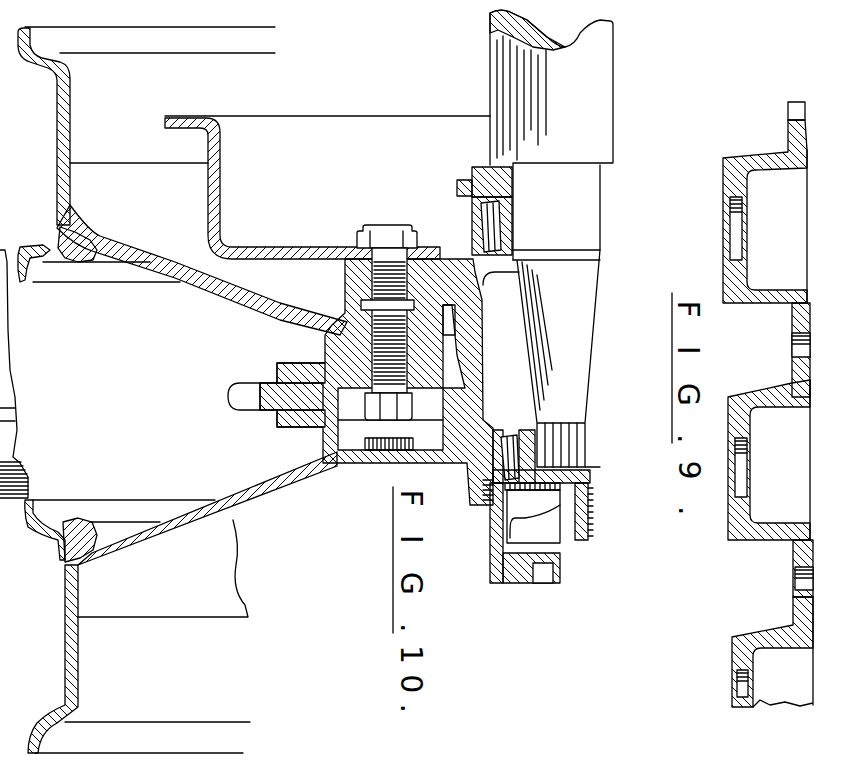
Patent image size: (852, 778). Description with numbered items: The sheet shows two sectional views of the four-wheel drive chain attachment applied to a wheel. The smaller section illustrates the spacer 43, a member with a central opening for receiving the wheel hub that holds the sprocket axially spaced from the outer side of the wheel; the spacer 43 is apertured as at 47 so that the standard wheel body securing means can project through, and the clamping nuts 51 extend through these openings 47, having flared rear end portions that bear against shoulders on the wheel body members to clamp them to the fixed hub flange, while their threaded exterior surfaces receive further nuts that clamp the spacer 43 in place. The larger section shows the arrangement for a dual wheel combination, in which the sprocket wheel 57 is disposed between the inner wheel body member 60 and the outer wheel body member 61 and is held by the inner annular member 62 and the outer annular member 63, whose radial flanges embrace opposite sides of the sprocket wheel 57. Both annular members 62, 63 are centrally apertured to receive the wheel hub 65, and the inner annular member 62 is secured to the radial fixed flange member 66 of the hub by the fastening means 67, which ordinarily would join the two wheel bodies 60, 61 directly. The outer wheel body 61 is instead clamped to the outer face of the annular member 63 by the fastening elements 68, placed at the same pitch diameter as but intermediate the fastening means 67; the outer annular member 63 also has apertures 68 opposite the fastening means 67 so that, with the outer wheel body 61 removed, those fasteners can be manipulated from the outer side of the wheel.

In FIG. 10, the inner wheel body member 60 is at (227, 293).
In FIG. 10, the outer wheel body member 61 is at (187, 510).
In FIG. 10, the inner annular member 62 is at (277, 370).
In FIG. 10, the sprocket wheel 57 is at (263, 412).
In FIG. 10, the outer annular member 63 is at (277, 430).
In FIG. 10, the radial fixed flange member 66 is at (358, 278).
In FIG. 10, the fastening elements 68 is at (348, 437).
In FIG. 10, the fastening means 67 is at (451, 390).
In FIG. 10, the wheel hub 65 is at (482, 490).
In FIG. 9, the clamping nut 51 is at (811, 380).
In FIG. 9, the aperture 47 is at (750, 443).
In FIG. 9, the spacer 43 is at (812, 557).